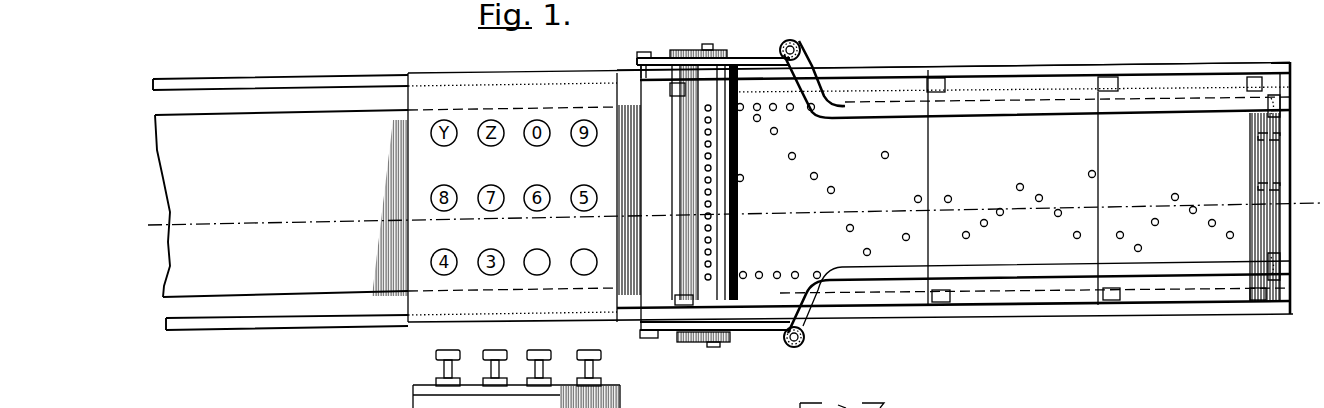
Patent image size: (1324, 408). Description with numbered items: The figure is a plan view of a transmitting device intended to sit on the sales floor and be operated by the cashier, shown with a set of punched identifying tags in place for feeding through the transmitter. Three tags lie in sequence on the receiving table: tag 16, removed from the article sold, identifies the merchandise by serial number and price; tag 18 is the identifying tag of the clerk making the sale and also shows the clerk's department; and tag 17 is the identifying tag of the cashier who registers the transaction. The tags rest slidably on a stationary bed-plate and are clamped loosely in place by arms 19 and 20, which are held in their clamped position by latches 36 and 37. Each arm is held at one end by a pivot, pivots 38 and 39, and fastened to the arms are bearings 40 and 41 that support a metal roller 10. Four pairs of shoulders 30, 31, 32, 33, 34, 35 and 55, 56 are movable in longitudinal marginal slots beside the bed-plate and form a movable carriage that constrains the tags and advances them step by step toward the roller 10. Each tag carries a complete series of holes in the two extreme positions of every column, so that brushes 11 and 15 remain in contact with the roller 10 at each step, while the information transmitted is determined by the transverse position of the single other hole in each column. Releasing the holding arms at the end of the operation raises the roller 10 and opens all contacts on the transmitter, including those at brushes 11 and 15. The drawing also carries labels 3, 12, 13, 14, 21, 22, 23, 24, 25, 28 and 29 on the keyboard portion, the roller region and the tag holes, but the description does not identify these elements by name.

The carriage 3 is at (165, 225).
The metal roller 10 is at (720, 193).
The brush 11 is at (705, 108).
The type 12 is at (705, 120).
The type 13 is at (705, 216).
The type 14 is at (705, 240).
The brush 15 is at (705, 264).
The tag 16 is at (1035, 90).
The tag 17 is at (987, 187).
The tag 18 is at (1145, 198).
The arm 19 is at (986, 108).
The arm 20 is at (1021, 270).
The key 21 is at (534, 276).
The keyboard plate 22 is at (400, 200).
The key 23 is at (583, 276).
The hole 24 is at (778, 130).
The hole 25 is at (796, 156).
The hole 28 is at (1178, 195).
The hole 29 is at (1198, 207).
The shoulder 30 is at (679, 83).
The shoulder 31 is at (675, 299).
The shoulder 32 is at (936, 78).
The shoulder 33 is at (941, 302).
The shoulder 34 is at (1108, 77).
The shoulder 35 is at (1112, 300).
The latch 36 is at (1268, 118).
The latch 37 is at (1266, 255).
The pivot 38 is at (644, 52).
The pivot 39 is at (647, 338).
The bearing 40 is at (711, 45).
The bearing 41 is at (712, 342).
The shoulder 55 is at (1255, 77).
The shoulder 56 is at (1258, 300).